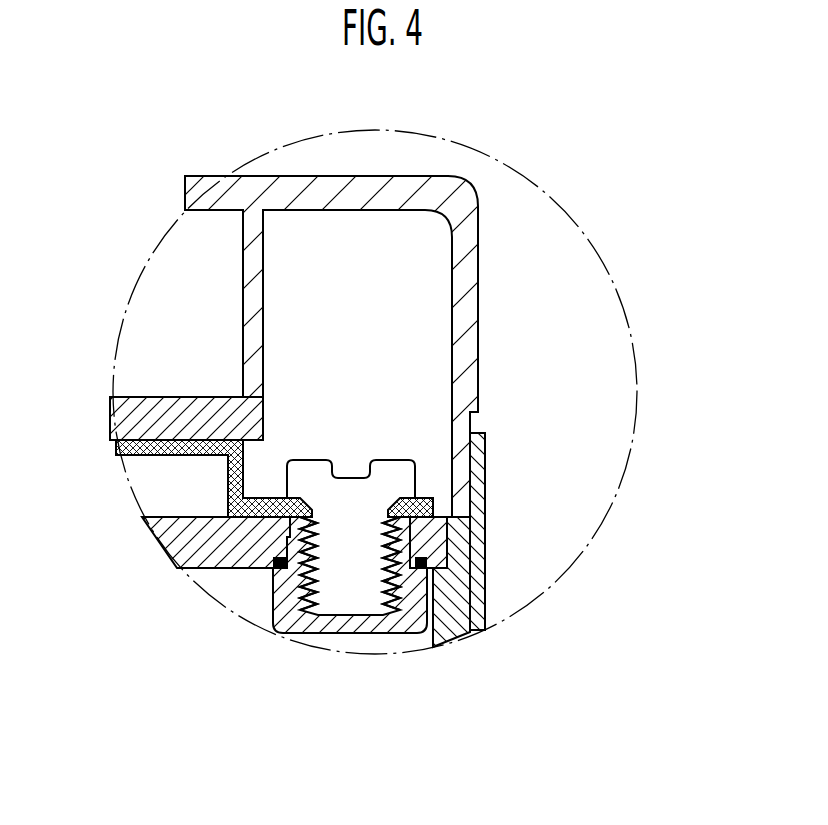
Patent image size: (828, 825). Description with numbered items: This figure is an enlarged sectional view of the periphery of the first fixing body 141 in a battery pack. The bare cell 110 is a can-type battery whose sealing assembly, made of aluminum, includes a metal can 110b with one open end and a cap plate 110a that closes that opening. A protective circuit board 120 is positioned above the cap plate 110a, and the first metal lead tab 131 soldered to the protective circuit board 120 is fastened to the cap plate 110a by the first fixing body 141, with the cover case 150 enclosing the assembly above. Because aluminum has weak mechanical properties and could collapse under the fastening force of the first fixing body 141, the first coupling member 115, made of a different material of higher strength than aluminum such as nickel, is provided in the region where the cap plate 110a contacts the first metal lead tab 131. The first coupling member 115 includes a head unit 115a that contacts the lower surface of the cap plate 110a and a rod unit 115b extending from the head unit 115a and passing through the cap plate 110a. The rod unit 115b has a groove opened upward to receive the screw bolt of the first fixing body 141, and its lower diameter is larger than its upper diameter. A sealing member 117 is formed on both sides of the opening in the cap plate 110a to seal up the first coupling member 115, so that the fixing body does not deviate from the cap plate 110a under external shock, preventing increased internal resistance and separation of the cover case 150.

The cover case 150 is at (310, 190).
The protective circuit board 120 is at (153, 397).
The first metal lead tab 131 is at (228, 484).
The first fixing body 141 is at (415, 462).
The cap plate 110a is at (187, 548).
The metal can 110b is at (232, 597).
The bare cell 110 is at (485, 548).
The first coupling member 115 is at (373, 640).
The head unit 115a is at (340, 622).
The rod unit 115b is at (408, 548).
The sealing member 117 is at (418, 569).